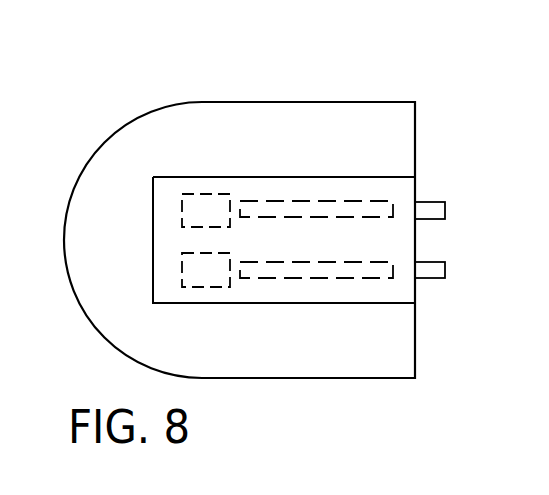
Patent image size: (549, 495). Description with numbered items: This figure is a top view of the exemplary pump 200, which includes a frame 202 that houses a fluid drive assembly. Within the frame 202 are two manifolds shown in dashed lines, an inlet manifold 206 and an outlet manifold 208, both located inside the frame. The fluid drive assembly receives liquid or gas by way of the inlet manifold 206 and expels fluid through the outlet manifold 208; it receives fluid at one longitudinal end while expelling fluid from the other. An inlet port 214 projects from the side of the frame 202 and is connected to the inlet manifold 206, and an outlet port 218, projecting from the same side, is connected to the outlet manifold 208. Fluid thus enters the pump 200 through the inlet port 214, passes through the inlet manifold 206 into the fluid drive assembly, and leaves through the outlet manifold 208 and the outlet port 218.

The pump 200 is at (332, 78).
The frame 202 is at (212, 100).
The inlet manifold 206 is at (252, 279).
The outlet manifold 208 is at (252, 200).
The inlet port 214 is at (428, 280).
The outlet port 218 is at (430, 200).